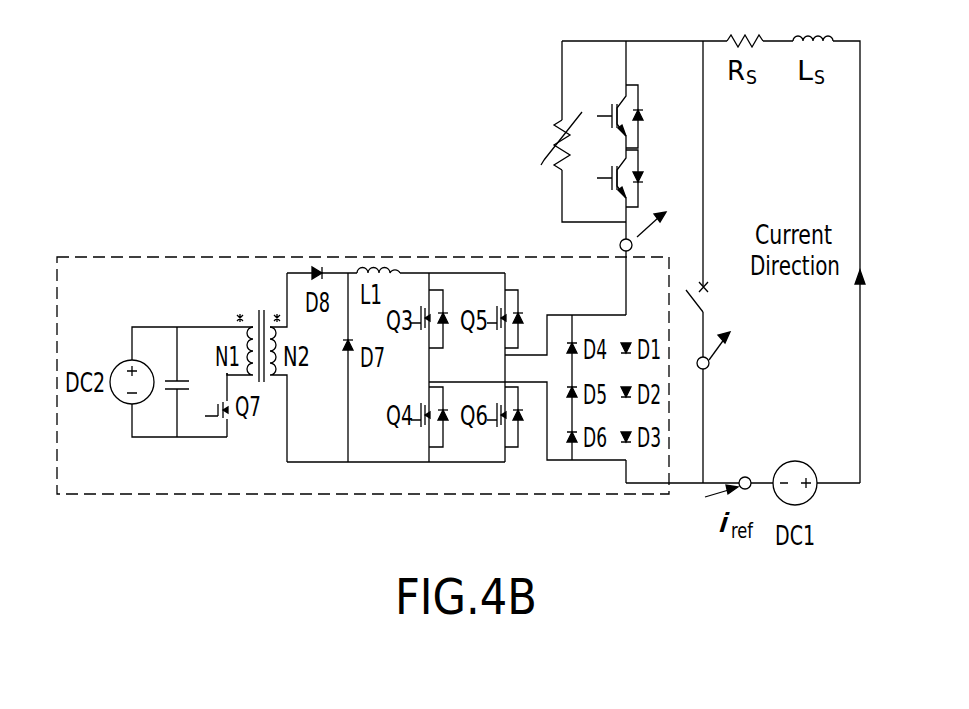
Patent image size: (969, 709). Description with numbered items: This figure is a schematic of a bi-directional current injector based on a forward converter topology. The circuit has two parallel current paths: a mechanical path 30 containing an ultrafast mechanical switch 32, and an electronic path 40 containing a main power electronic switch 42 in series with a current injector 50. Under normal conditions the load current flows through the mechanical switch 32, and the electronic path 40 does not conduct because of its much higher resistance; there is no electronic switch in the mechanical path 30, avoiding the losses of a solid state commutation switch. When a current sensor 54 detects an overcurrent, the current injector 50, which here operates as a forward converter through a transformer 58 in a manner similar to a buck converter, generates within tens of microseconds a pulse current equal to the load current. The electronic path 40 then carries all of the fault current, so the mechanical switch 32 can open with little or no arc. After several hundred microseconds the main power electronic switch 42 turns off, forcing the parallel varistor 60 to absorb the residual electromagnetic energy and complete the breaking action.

The mechanical path 30 is at (703, 167).
The ultrafast mechanical switch 32 is at (700, 307).
The electronic path 40 is at (628, 53).
The main power electronic switch 42 is at (680, 86).
The current injector 50 is at (405, 240).
The current sensor 54 is at (712, 372).
The transformer 58 is at (260, 285).
The varistor 60 is at (566, 126).